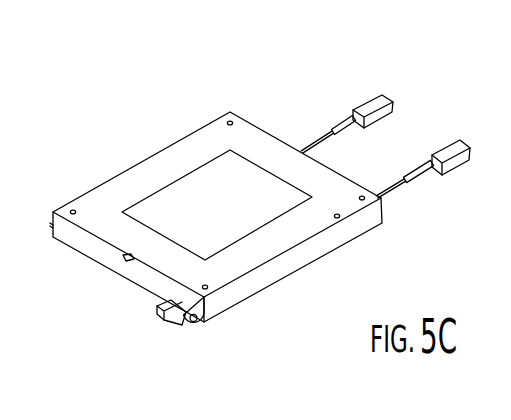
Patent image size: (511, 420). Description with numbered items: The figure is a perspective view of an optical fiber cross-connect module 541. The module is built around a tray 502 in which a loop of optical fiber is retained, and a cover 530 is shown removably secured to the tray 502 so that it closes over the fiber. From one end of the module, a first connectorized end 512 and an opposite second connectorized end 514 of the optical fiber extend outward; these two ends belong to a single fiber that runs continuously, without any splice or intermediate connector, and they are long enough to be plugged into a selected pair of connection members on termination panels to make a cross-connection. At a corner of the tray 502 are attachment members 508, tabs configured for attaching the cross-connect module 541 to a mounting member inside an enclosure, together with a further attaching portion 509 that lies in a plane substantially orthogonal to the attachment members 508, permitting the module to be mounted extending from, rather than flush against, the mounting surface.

The cross-connect module 541 is at (92, 159).
The tray 502 is at (292, 270).
The cover 530 is at (331, 205).
The first connectorized end 512 is at (391, 96).
The second connectorized end 514 is at (468, 139).
The attachment members 508 is at (157, 317).
The attaching portion 509 is at (198, 321).